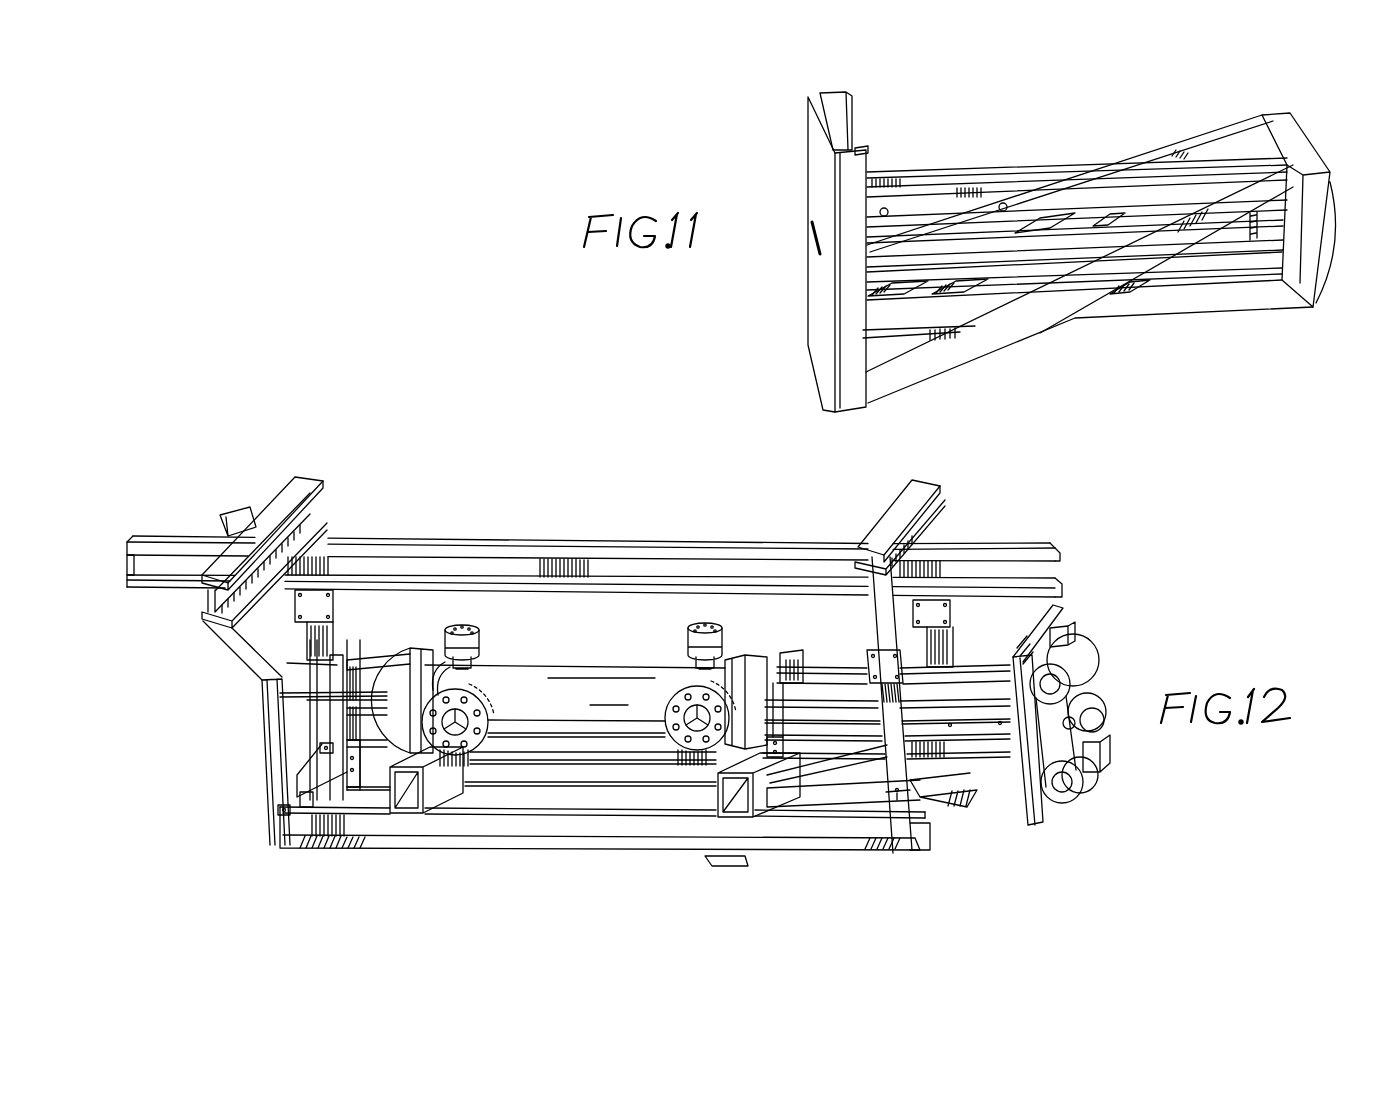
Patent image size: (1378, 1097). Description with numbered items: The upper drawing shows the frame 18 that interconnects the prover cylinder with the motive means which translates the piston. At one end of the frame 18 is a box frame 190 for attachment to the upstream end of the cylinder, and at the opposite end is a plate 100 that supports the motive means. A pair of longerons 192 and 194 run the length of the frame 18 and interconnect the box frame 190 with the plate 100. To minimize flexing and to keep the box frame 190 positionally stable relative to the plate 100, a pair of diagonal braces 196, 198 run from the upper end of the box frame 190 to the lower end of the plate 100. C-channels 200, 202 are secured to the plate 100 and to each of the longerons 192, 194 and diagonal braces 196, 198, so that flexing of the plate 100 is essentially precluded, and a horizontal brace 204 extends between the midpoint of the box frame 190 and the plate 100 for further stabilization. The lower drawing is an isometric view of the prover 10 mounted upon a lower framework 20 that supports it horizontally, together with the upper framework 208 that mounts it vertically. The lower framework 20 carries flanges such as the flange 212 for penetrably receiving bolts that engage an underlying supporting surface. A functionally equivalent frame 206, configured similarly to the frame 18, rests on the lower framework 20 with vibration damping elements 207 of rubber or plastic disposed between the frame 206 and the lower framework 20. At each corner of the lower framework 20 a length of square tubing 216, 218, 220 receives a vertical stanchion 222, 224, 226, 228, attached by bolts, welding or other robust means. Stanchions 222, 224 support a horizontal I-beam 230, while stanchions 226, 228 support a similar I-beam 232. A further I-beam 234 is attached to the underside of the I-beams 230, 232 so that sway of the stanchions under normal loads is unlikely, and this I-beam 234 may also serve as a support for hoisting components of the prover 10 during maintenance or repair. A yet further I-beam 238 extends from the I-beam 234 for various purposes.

In FIG. 11, the plate 100 is at (806, 156).
In FIG. 11, the C-channel 202 is at (826, 102).
In FIG. 11, the C-channel 200 is at (869, 150).
In FIG. 11, the horizontal brace 204 is at (1077, 165).
In FIG. 11, the longeron 194 is at (990, 232).
In FIG. 11, the frame 18 is at (1135, 373).
In FIG. 11, the diagonal brace 196 is at (1181, 155).
In FIG. 11, the diagonal brace 198 is at (1213, 205).
In FIG. 11, the box frame 190 is at (1287, 125).
In FIG. 11, the longeron 192 is at (1222, 310).
In FIG. 12, the I-beam 234 is at (565, 541).
In FIG. 12, the upper framework 208 is at (733, 534).
In FIG. 12, the horizontal I-beam 230 is at (325, 479).
In FIG. 12, the I-beam 238 is at (238, 508).
In FIG. 12, the I-beam 232 is at (950, 517).
In FIG. 12, the vertical stanchion 226 is at (237, 660).
In FIG. 12, the vertical stanchion 224 is at (272, 765).
In FIG. 12, the vertical stanchion 222 is at (340, 638).
In FIG. 12, the square tubing 218 is at (320, 748).
In FIG. 12, the square tubing 216 is at (280, 812).
In FIG. 12, the lower framework 20 is at (782, 853).
In FIG. 12, the flange 212 is at (718, 861).
In FIG. 12, the prover 10 is at (562, 663).
In FIG. 12, the vertical stanchion 228 is at (945, 636).
In FIG. 12, the frame 206 is at (858, 752).
In FIG. 12, the vibration damping element 207 is at (946, 797).
In FIG. 12, the square tubing 220 is at (990, 783).